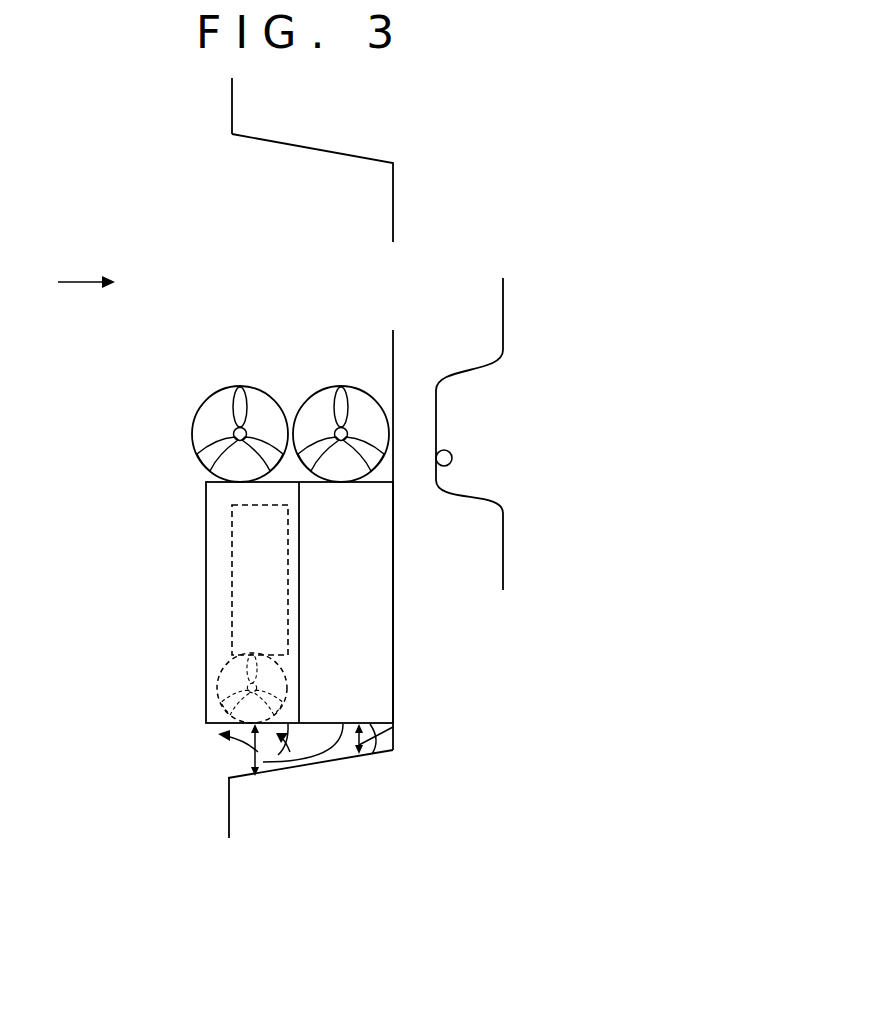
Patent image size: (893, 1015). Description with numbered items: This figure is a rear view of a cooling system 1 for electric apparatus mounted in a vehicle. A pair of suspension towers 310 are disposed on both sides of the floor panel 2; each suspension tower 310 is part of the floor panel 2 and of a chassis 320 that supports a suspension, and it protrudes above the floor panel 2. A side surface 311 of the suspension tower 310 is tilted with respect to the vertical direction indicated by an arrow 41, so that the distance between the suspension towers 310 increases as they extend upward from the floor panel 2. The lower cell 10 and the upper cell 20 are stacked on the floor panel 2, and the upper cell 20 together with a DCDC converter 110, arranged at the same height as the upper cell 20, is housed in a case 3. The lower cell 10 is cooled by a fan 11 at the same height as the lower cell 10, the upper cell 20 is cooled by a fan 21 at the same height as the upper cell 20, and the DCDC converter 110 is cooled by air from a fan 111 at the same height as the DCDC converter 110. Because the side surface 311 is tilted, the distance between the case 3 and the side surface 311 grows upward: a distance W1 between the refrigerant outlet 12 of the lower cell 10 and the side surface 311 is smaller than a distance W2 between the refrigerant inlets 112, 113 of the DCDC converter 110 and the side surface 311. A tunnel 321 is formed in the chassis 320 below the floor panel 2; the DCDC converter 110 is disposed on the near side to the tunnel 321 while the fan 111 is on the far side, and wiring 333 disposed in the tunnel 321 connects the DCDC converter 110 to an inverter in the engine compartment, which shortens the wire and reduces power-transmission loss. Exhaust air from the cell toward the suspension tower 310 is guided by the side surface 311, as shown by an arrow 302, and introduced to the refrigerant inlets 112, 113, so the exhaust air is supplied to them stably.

The cooling system 1 is at (96, 148).
The arrow indicating vertical direction 41 is at (75, 281).
The floor panel 2 is at (394, 662).
The case 3 is at (193, 482).
The lower cell 10 is at (370, 566).
The fan 11 is at (356, 386).
The refrigerant outlet 12 is at (394, 726).
The upper cell 20 is at (206, 540).
The fan 21 is at (253, 386).
The DCDC converter 110 is at (232, 586).
The fan 111 is at (218, 672).
The refrigerant inlet 112 is at (353, 806).
The refrigerant inlet 113 is at (294, 758).
The arrow indicating exhaust air flow 302 is at (284, 760).
The suspension tower 310 is at (231, 108).
The side surface 311 is at (258, 140).
The chassis 320 is at (504, 558).
The tunnel 321 is at (470, 497).
The wiring 333 is at (453, 455).
The distance W1 is at (385, 751).
The distance W2 is at (250, 758).